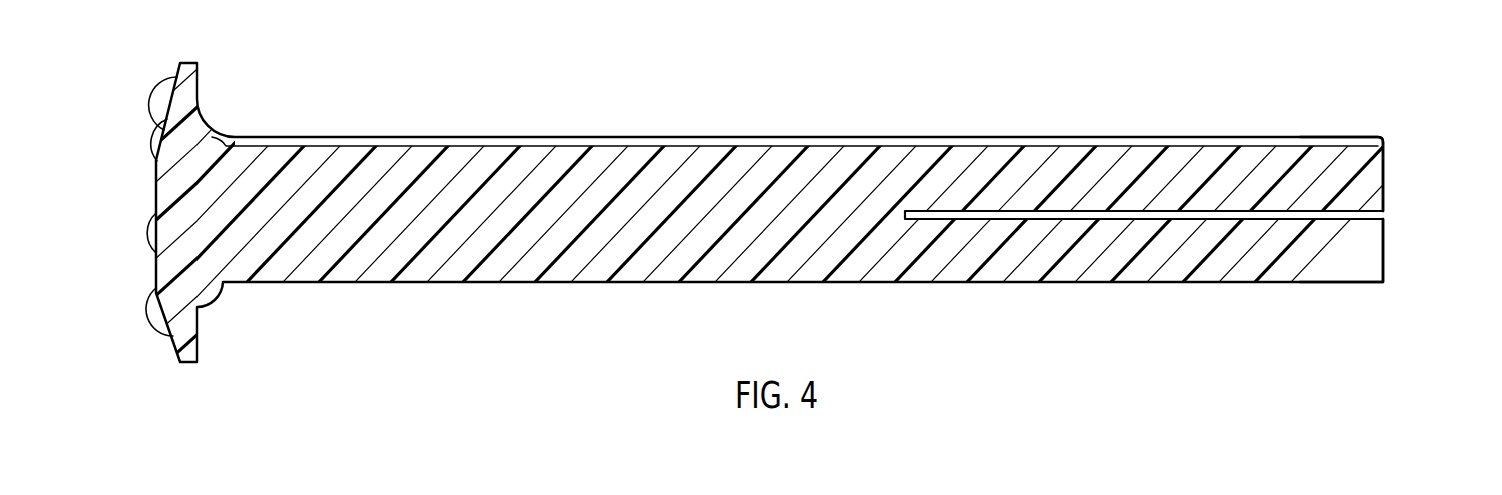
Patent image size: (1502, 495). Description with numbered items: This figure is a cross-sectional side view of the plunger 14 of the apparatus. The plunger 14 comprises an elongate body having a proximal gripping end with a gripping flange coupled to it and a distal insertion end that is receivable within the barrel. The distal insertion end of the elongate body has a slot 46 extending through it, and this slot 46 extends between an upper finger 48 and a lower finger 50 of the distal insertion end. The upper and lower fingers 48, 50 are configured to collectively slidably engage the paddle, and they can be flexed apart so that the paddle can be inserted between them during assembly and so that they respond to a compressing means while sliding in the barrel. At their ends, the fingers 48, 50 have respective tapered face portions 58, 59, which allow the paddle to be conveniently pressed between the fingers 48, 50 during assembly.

The plunger 14 is at (250, 96).
The slot 46 is at (1113, 216).
The upper finger 48 is at (1385, 181).
The tapered face portion 58 is at (1385, 210).
The tapered face portion 59 is at (1383, 220).
The lower finger 50 is at (1383, 253).